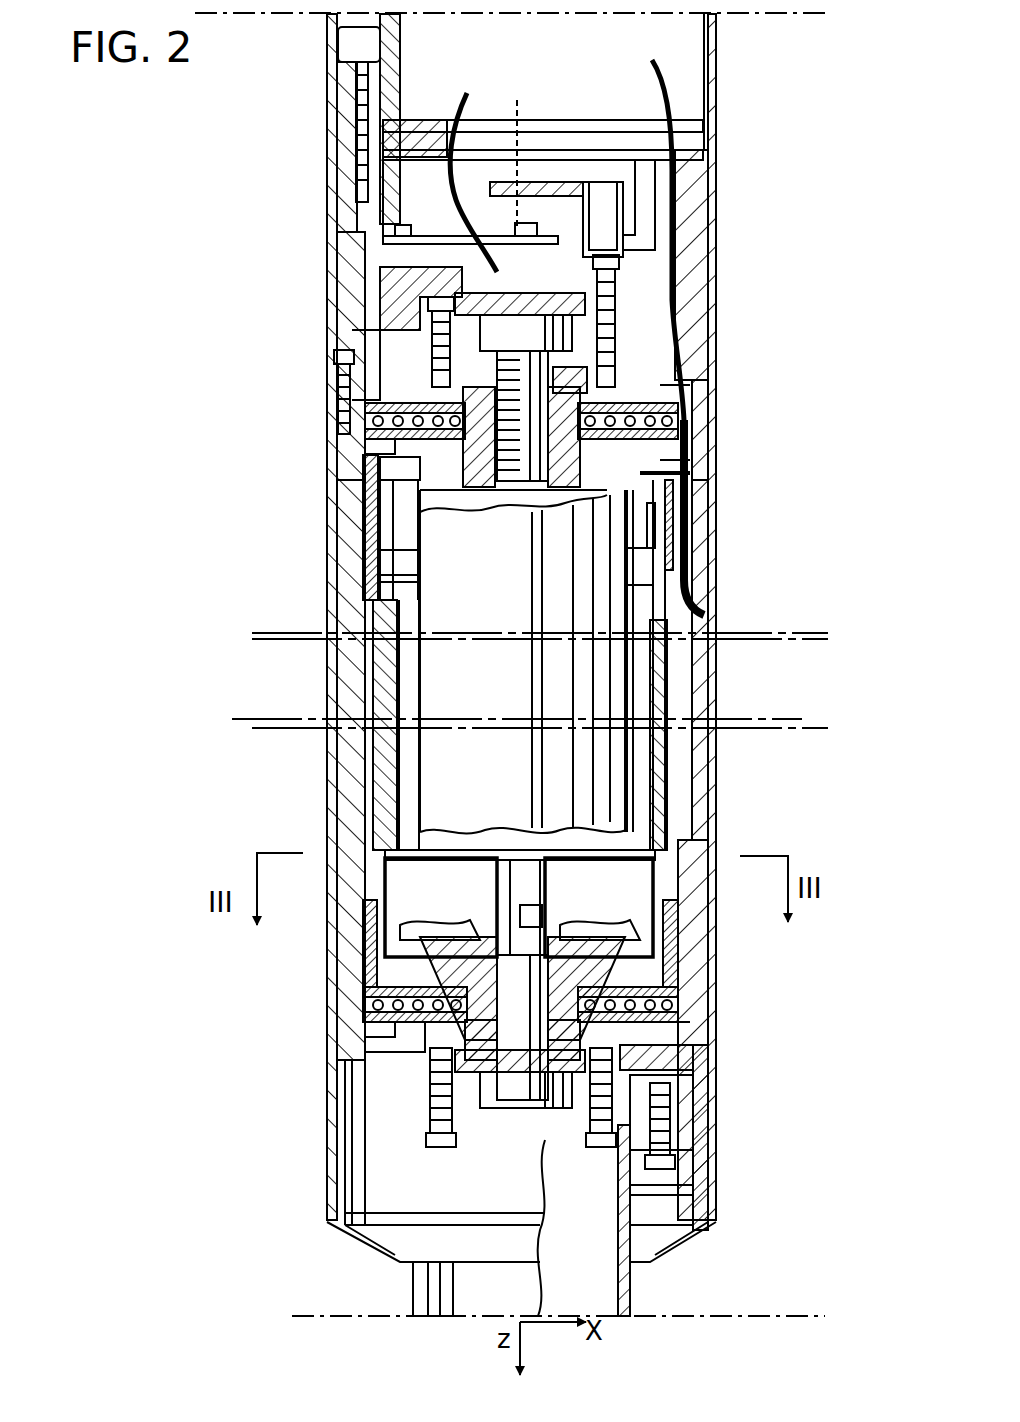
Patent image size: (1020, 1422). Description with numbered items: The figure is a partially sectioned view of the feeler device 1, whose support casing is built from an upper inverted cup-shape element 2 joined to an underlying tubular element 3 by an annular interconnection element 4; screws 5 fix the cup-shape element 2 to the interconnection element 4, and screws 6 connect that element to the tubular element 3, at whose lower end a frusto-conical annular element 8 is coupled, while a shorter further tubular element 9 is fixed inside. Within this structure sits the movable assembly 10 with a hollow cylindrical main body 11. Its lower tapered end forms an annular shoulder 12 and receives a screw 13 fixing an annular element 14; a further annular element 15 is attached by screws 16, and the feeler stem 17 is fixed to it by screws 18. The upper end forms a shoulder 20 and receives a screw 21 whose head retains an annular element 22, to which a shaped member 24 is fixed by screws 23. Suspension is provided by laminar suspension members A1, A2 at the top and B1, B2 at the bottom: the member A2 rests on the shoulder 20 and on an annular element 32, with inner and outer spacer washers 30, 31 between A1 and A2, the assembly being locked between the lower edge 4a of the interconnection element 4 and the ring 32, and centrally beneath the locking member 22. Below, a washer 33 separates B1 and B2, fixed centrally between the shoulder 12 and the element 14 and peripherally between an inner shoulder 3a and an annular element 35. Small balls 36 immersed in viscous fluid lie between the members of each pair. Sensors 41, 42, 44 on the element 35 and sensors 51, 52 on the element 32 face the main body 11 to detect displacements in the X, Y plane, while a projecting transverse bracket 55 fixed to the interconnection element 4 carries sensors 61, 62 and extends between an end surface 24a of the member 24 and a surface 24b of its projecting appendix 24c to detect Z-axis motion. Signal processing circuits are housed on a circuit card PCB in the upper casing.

The feeler device 1 is at (760, 495).
The upper inverted cup-shape element 2 is at (335, 96).
The tubular element 3 is at (700, 684).
The inner shoulder of the tubular element 3a is at (370, 1024).
The annular interconnection element 4 is at (352, 268).
The lower edge of the annular interconnection element 4a is at (352, 382).
The screws 5 is at (355, 70).
The screws 6 is at (338, 356).
The frusto-conical annular element 8 is at (355, 1250).
The further tubular element 9 is at (380, 606).
The movable assembly 10 is at (632, 660).
The main body 11 is at (405, 690).
The annular shoulder 12 is at (522, 1027).
The screw 13 is at (508, 1098).
The annular element 14 is at (680, 1060).
The further annular element 15 is at (685, 1108).
The screws 16 is at (437, 1146).
The feeler stem 17 is at (415, 1290).
The screws 18 is at (670, 1163).
The shoulder 20 is at (522, 416).
The screw 21 is at (600, 330).
The annular element 22 is at (695, 350).
The screws 23 is at (432, 330).
The shaped member 24 is at (500, 290).
The end surface 24a is at (504, 278).
The surface 24b is at (522, 210).
The projecting appendix 24c is at (568, 190).
The inner spacer washer 30 is at (652, 408).
The outer spacer washer 31 is at (365, 413).
The annular element 32 is at (380, 512).
The washer 33 is at (521, 951).
The annular element 35 is at (375, 940).
The small balls 36 is at (380, 452).
The sensor 41 is at (398, 930).
The sensor 42 is at (640, 922).
The sensor 44 is at (520, 890).
The sensor 51 is at (420, 530).
The sensor 52 is at (625, 548).
The projecting transverse bracket 55 is at (432, 240).
The sensor 61 is at (526, 333).
The sensor 62 is at (555, 185).
The laminar suspension member A1 is at (690, 385).
The laminar suspension member A2 is at (696, 462).
The laminar suspension member B1 is at (660, 975).
The laminar suspension member B2 is at (660, 1022).
The circuit card PCB is at (672, 52).